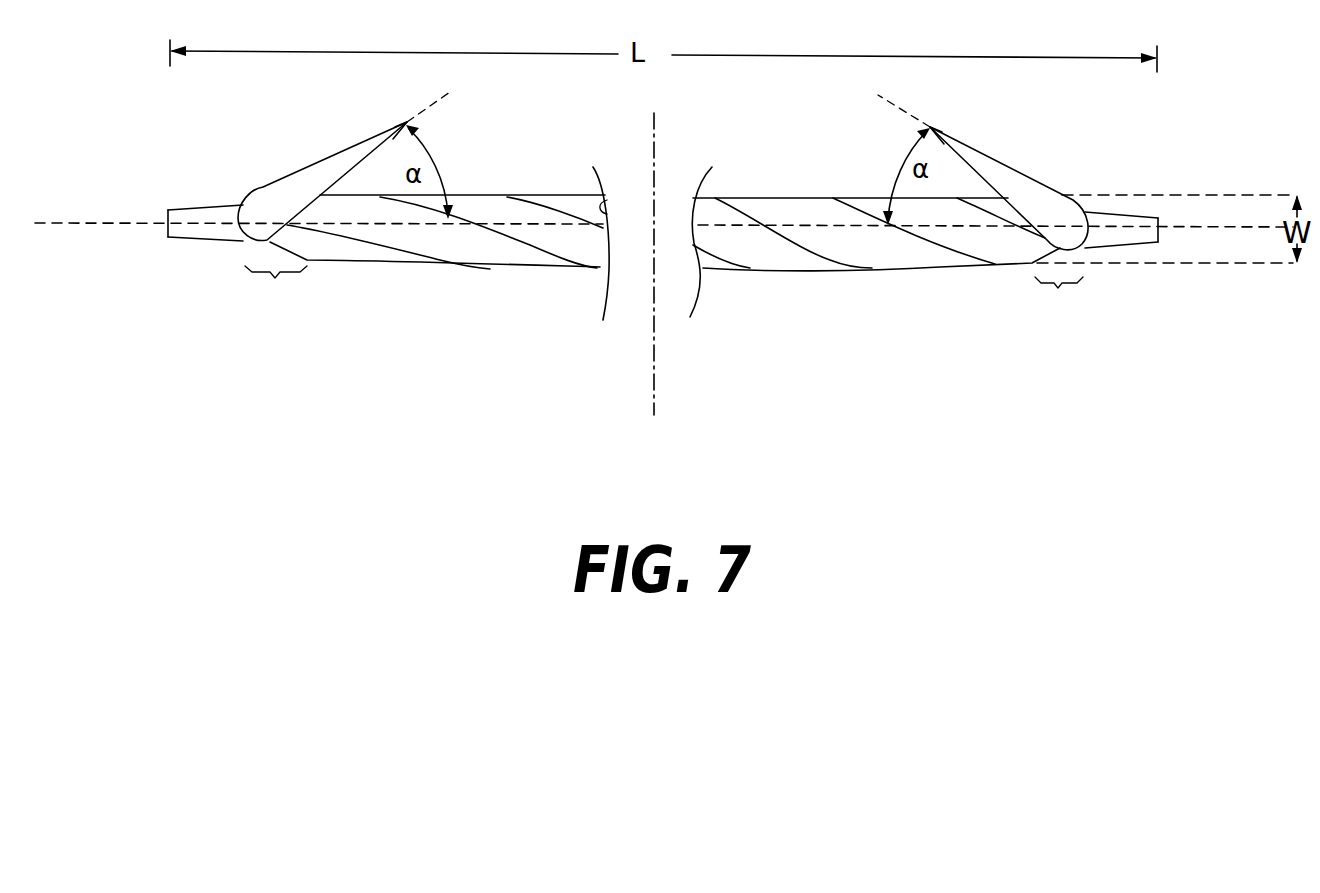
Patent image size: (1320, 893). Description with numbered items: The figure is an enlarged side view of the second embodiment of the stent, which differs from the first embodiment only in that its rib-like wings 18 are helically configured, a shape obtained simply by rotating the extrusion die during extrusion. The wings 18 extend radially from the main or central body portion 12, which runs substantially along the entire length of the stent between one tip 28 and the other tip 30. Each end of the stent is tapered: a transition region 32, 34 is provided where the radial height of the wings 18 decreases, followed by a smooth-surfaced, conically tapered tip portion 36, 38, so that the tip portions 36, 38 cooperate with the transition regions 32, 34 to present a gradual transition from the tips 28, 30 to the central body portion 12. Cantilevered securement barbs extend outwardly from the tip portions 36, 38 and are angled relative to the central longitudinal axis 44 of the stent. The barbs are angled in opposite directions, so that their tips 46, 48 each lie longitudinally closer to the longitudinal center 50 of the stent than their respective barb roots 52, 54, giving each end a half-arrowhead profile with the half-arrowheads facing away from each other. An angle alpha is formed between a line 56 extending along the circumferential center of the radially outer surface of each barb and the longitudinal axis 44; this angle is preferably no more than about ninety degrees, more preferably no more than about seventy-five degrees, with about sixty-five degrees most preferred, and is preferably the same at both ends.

The main or central body portion 12 is at (593, 250).
The rib-like wings 18 is at (412, 262).
The tip 28 is at (146, 217).
The tip 30 is at (1178, 237).
The transition region 32 is at (276, 291).
The transition region 34 is at (1059, 301).
The tip portion 36 is at (197, 207).
The tip portion 38 is at (1148, 217).
The central longitudinal axis 44 is at (116, 224).
The barb tip 46 is at (364, 143).
The barb tip 48 is at (962, 128).
The longitudinal center 50 is at (654, 352).
The barb root 52 is at (283, 173).
The barb root 54 is at (1022, 167).
The line 56 is at (412, 121).